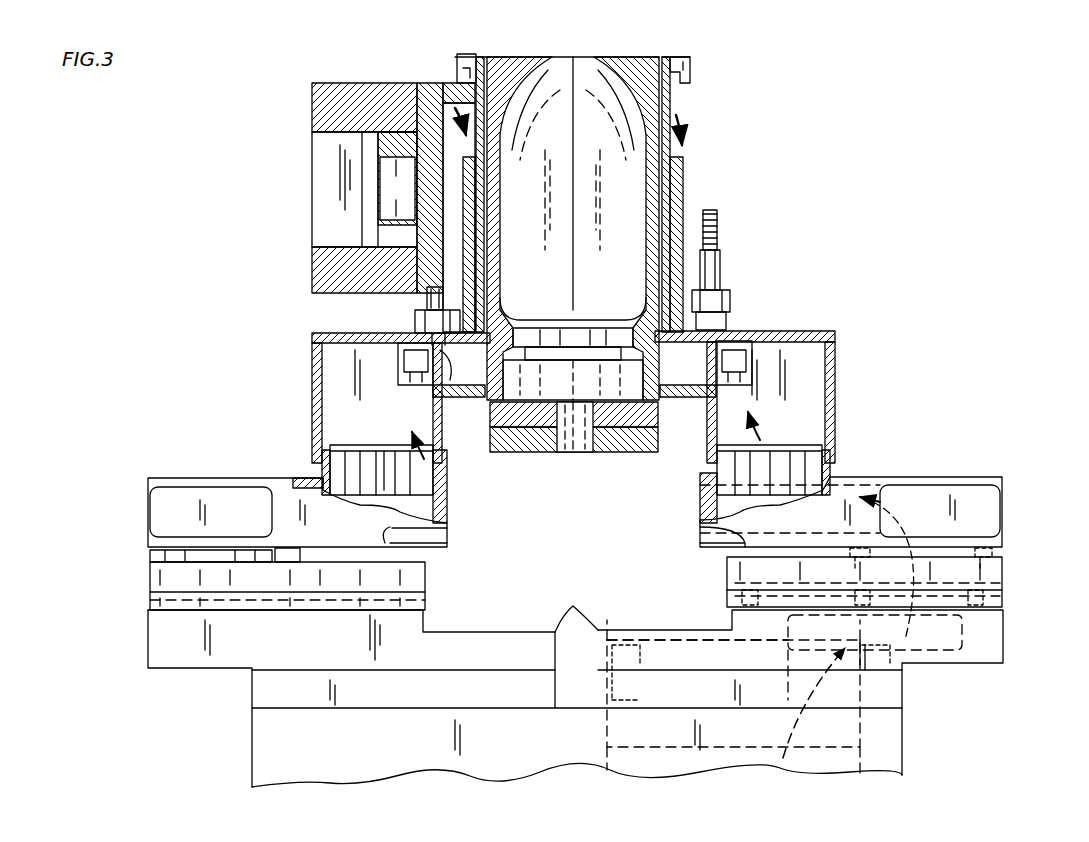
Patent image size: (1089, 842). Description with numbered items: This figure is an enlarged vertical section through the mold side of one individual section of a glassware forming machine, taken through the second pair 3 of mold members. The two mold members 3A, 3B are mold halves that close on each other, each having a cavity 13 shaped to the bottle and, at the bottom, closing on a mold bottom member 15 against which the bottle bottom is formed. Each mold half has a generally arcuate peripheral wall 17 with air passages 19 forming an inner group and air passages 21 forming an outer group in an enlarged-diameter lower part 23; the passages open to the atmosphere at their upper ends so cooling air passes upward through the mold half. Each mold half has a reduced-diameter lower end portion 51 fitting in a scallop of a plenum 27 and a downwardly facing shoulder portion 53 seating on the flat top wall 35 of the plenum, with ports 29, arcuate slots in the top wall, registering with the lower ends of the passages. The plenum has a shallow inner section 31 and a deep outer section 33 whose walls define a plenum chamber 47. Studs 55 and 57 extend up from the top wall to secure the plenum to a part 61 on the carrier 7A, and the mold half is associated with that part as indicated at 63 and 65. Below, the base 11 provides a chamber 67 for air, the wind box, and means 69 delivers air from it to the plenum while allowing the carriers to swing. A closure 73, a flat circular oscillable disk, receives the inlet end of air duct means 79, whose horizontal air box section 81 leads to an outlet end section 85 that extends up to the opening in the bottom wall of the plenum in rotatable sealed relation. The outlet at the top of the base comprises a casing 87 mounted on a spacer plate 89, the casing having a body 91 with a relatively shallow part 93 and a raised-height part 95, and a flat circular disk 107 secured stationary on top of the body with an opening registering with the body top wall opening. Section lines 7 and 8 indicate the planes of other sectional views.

The second pair of mold members 3 is at (672, 57).
The mold member 3A is at (540, 36).
The mold member 3B is at (642, 58).
The section line 7- 7 is at (685, 487).
The carrier 7A is at (312, 185).
The section line 8- 8 is at (677, 625).
The base 11 is at (252, 745).
The cavity 13 is at (645, 125).
The mold bottom member 15 is at (528, 318).
The peripheral wall 17 is at (508, 176).
The air passages 19 is at (482, 58).
The air passages 21 is at (445, 182).
The enlarged-diameter lower part 23 is at (684, 172).
The plenum 27 is at (310, 338).
The ports 29 is at (438, 395).
The inner section 31 is at (666, 402).
The outer section 33 is at (312, 386).
The top wall 35 is at (322, 332).
The plenum chamber 47 is at (806, 376).
The reduced-diameter lower end portion 51 is at (483, 405).
The shoulder portion 53 is at (505, 320).
The stud 55 is at (418, 312).
The stud 57 is at (724, 276).
The part 61 is at (418, 84).
The mold half association 63 is at (418, 290).
The mold half association 65 is at (460, 56).
The chamber 67 is at (540, 755).
The air delivery means 69 is at (130, 468).
The closure 73 is at (150, 576).
The air duct means 79 is at (210, 478).
The horizontal section 81 is at (148, 507).
The outlet end section 85 is at (447, 502).
The casing 87 is at (148, 668).
The spacer plate 89 is at (252, 690).
The body 91 is at (560, 630).
The shallow part 93 is at (505, 632).
The raised-height part 95 is at (148, 625).
The disk 107 is at (148, 600).